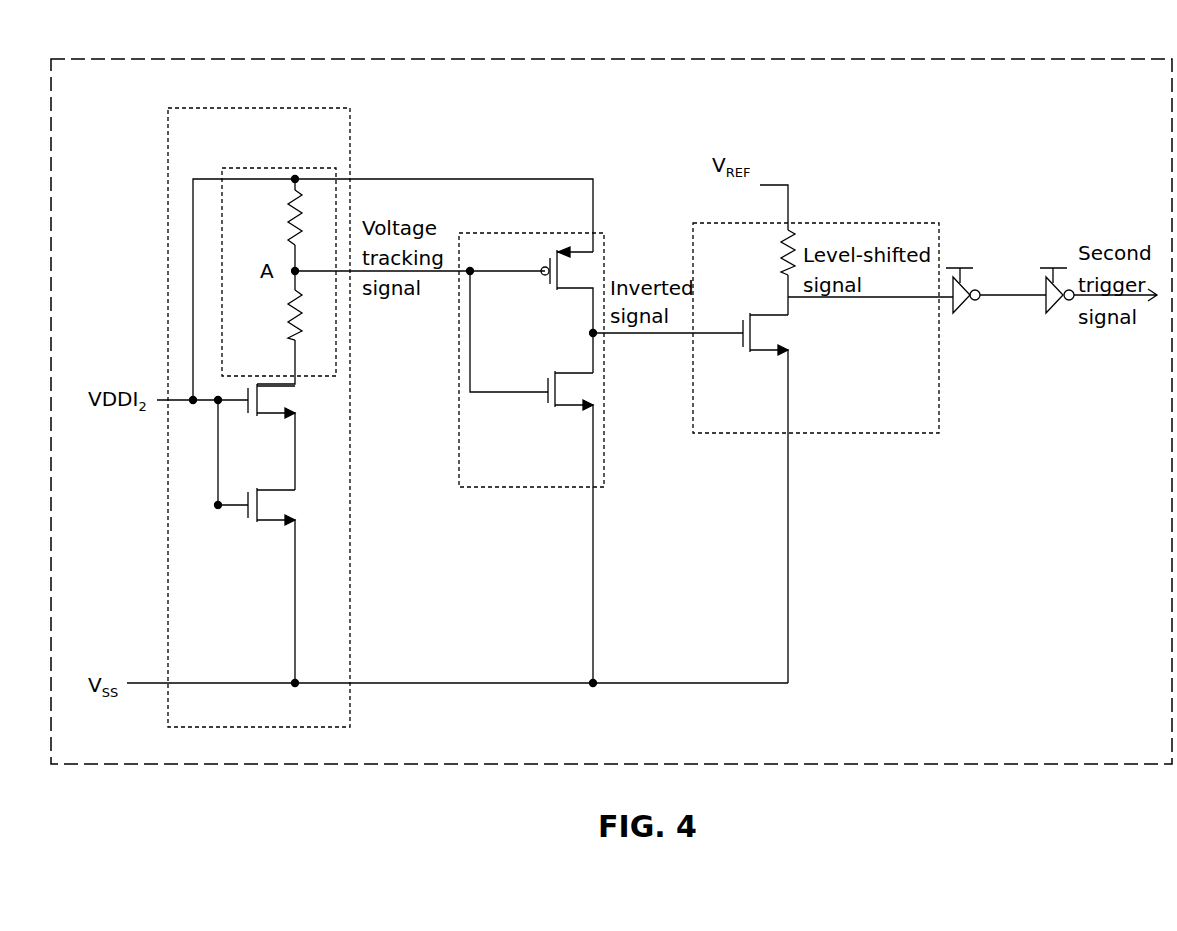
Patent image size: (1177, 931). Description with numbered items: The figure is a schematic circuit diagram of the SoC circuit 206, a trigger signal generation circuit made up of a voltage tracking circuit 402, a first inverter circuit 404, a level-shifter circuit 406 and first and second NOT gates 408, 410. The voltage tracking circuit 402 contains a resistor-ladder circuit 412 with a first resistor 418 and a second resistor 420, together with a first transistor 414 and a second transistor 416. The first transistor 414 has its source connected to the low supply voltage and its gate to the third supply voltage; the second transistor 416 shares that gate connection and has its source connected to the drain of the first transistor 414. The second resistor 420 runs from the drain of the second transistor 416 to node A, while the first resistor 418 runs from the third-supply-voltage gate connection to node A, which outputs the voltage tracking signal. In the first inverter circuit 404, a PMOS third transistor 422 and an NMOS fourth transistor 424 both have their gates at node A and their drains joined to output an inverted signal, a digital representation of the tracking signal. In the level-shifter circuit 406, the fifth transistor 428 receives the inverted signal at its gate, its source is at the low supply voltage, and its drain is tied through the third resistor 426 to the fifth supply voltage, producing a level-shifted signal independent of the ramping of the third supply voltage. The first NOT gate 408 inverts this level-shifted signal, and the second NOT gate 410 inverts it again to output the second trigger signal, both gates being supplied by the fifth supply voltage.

The SoC circuit 206 is at (954, 58).
The voltage tracking circuit 402 is at (330, 108).
The first inverter circuit 404 is at (483, 233).
The level-shifter circuit 406 is at (886, 223).
The first NOT gate 408 is at (963, 310).
The second NOT gate 410 is at (1056, 310).
The resistor-ladder circuit 412 is at (235, 168).
The first transistor 414 is at (262, 525).
The second transistor 416 is at (268, 418).
The first resistor 418 is at (288, 232).
The second resistor 420 is at (303, 322).
The third transistor 422 is at (546, 286).
The fourth transistor 424 is at (566, 372).
The third resistor 426 is at (783, 266).
The fifth transistor 428 is at (761, 354).